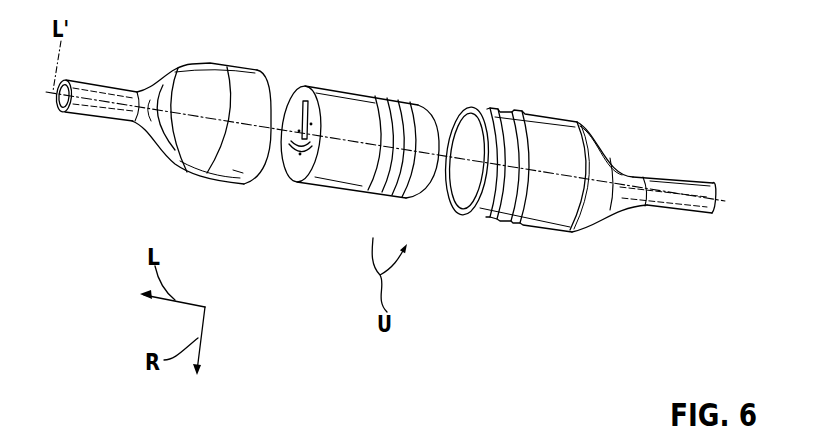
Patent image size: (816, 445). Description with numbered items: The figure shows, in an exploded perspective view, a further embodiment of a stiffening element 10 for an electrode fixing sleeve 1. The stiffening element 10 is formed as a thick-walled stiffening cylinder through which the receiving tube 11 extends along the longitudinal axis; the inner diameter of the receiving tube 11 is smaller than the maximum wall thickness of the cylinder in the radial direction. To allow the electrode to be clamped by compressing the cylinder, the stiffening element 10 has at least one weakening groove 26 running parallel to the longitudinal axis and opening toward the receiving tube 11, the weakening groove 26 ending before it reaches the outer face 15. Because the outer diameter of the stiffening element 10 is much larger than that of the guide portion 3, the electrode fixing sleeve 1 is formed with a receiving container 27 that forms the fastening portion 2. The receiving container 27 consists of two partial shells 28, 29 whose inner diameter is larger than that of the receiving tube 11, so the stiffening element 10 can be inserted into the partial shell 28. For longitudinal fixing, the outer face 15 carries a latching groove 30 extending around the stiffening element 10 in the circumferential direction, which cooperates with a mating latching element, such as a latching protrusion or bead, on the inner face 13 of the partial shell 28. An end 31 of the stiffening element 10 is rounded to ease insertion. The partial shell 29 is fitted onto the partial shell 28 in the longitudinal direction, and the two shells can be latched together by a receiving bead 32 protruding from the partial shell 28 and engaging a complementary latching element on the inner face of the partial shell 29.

The electrode fixing sleeve 1 is at (567, 78).
The fastening portion 2 is at (562, 197).
The receiving container 27 is at (562, 197).
The guide portion 3 is at (668, 232).
The stiffening element 10 is at (358, 176).
The receiving tube 11 is at (38, 101).
The inner face 13 is at (463, 192).
The outer face 15 is at (358, 142).
The weakening groove 26 is at (304, 103).
The partial shell 28 is at (562, 173).
The partial shell 29 is at (389, 109).
The latching groove 30 is at (393, 97).
The end 31 is at (451, 93).
The receiving bead 32 is at (498, 110).